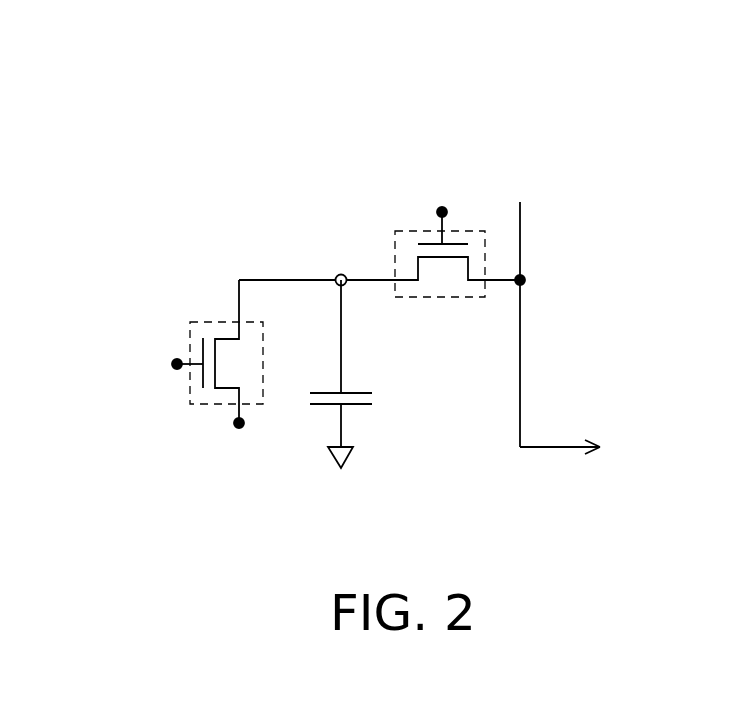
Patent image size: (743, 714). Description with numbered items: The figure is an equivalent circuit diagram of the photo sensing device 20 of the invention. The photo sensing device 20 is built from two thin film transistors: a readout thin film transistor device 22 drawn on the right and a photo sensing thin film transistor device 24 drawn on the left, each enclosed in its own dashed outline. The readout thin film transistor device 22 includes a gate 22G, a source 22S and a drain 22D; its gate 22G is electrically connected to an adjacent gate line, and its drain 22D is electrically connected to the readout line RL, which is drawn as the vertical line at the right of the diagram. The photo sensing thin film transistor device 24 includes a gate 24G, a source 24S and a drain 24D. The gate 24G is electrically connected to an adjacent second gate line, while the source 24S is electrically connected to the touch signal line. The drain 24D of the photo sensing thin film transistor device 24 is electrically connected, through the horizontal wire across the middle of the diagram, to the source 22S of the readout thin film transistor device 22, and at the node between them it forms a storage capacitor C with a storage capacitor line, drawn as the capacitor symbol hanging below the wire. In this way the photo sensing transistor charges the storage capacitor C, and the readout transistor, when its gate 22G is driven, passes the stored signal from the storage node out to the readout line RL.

The photo sensing device 20 is at (607, 139).
The readout thin film transistor device 22 is at (412, 231).
The gate 22G is at (458, 243).
The source 22S is at (408, 280).
The drain 22D is at (478, 297).
The photo sensing thin film transistor device 24 is at (190, 322).
The drain 24D is at (238, 331).
The gate 24G is at (203, 378).
The source 24S is at (230, 401).
The storage capacitor C is at (373, 402).
The readout line RL is at (521, 360).